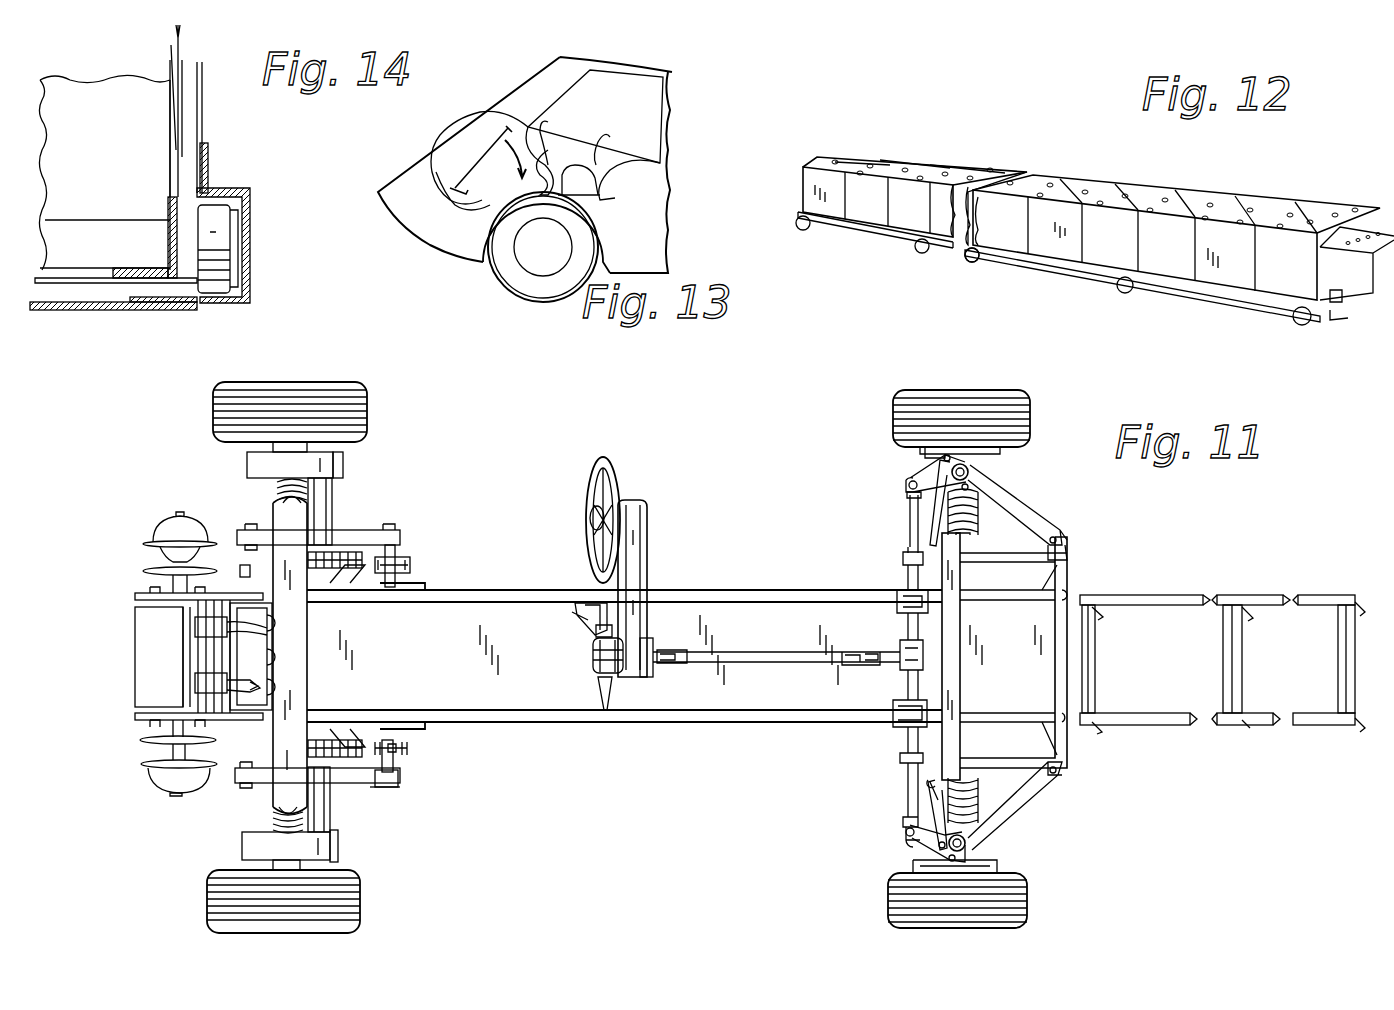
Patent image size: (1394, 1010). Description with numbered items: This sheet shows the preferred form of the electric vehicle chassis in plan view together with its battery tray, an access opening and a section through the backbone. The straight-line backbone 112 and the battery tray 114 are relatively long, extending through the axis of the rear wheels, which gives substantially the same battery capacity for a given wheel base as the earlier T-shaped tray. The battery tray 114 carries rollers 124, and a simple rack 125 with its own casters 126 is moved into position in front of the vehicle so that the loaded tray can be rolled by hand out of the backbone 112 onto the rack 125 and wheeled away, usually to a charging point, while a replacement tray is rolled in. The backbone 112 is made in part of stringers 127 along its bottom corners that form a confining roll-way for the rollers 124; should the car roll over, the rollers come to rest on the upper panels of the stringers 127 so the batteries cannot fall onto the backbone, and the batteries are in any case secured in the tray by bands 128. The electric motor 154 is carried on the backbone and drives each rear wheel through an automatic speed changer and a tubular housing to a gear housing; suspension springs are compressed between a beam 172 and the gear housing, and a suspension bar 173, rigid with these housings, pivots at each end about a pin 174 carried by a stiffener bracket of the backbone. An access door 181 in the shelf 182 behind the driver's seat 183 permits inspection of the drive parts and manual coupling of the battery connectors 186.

In FIG. 11, the backbone 112 is at (738, 610).
In FIG. 12, the battery tray 114 is at (1170, 285).
In FIG. 14, the roller 124 is at (198, 278).
In FIG. 12, the roller 124 is at (972, 262).
In FIG. 11, the rack 125 is at (1168, 727).
In FIG. 11, the caster 126 is at (1248, 727).
In FIG. 14, the stringer 127 is at (250, 210).
In FIG. 11, the stringer 127 is at (678, 590).
In FIG. 14, the band 128 is at (182, 127).
In FIG. 13, the electric motor 154 is at (442, 205).
In FIG. 11, the electric motor 154 is at (135, 640).
In FIG. 11, the beam 172 is at (307, 690).
In FIG. 11, the suspension bar 173 is at (400, 778).
In FIG. 11, the pin 174 is at (405, 745).
In FIG. 13, the access door 181 is at (486, 160).
In FIG. 13, the shelf 182 is at (567, 139).
In FIG. 13, the driver's seat 183 is at (610, 158).
In FIG. 11, the connector 186 is at (197, 683).